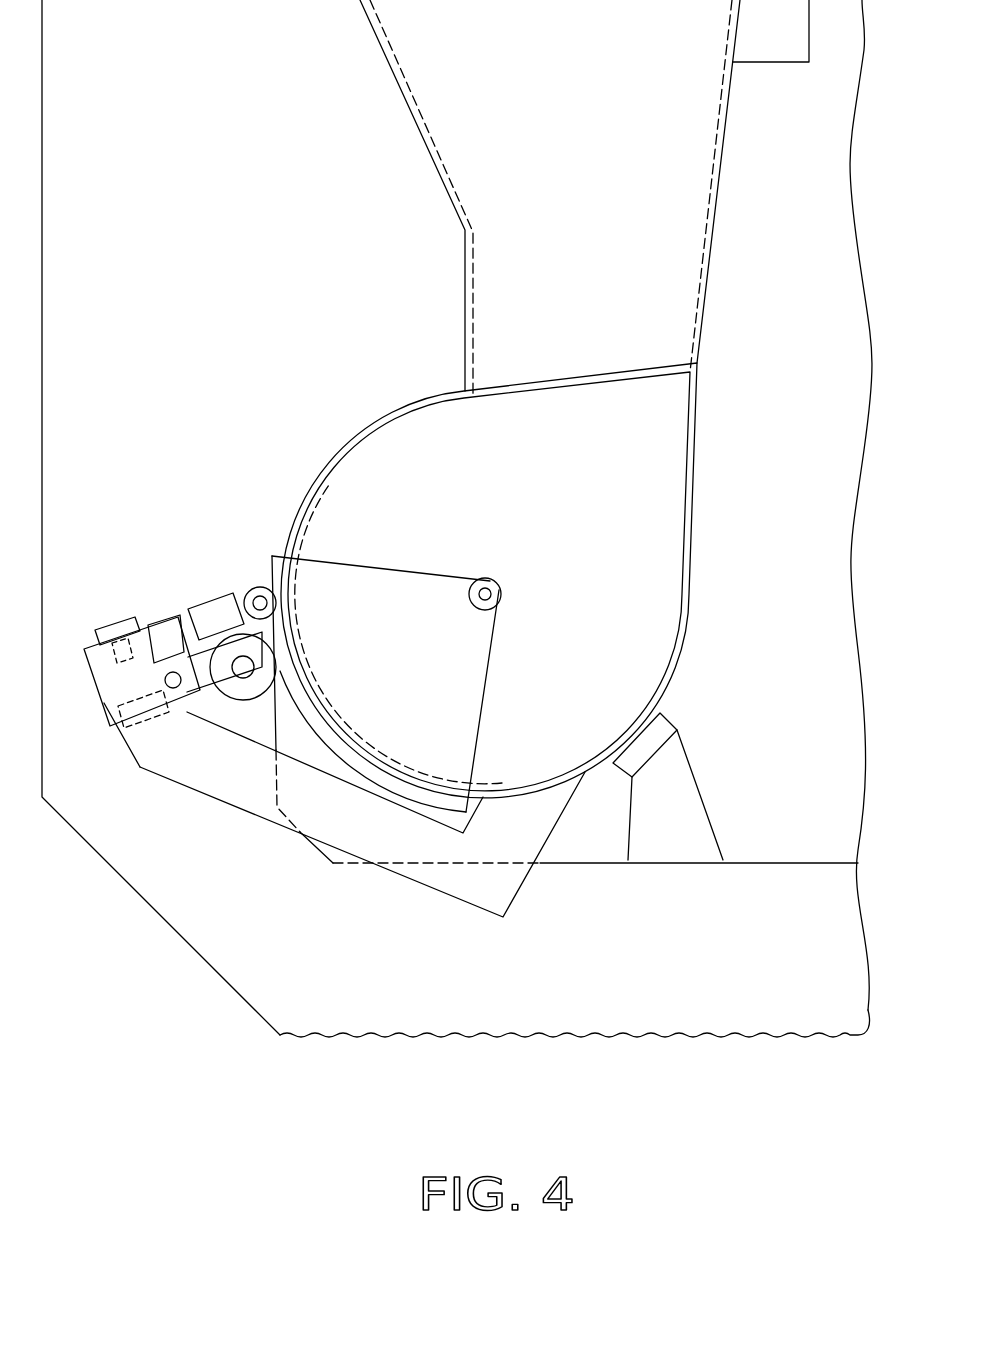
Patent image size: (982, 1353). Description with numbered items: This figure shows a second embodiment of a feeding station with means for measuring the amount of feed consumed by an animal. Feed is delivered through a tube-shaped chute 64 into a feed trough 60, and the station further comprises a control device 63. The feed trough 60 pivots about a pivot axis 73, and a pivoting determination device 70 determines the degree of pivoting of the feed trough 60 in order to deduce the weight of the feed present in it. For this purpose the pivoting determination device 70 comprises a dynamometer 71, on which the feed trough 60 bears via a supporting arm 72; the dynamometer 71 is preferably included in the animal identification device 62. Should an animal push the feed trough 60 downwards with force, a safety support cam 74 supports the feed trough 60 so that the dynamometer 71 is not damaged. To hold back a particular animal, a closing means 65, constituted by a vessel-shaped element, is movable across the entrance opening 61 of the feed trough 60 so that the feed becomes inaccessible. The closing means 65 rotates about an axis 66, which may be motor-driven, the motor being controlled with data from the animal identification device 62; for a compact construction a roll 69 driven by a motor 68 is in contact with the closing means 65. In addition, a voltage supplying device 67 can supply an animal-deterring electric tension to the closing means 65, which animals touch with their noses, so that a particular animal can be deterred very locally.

The feed trough 60 is at (670, 670).
The entrance opening 61 is at (370, 428).
The animal identification device 62 is at (132, 675).
The control device 63 is at (790, 28).
The tube-shaped chute 64 is at (712, 248).
The closing means 65 is at (312, 568).
The axis 66 is at (485, 594).
The voltage supplying device 67 is at (218, 615).
The motor 68 is at (173, 688).
The roll 69 is at (250, 698).
The pivoting determination device 70 is at (165, 630).
The dynamometer 71 is at (143, 702).
The supporting arm 72 is at (368, 825).
The pivot axis 73 is at (260, 603).
The safety support cam 74 is at (688, 823).